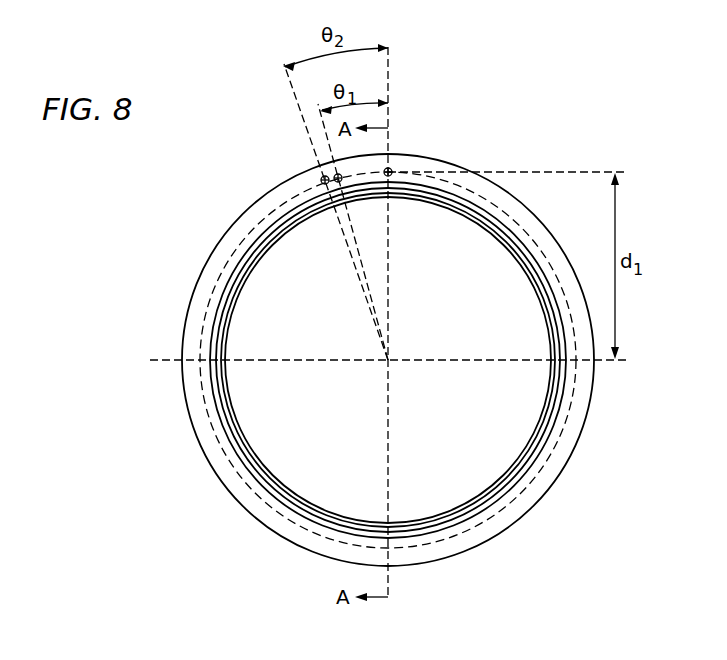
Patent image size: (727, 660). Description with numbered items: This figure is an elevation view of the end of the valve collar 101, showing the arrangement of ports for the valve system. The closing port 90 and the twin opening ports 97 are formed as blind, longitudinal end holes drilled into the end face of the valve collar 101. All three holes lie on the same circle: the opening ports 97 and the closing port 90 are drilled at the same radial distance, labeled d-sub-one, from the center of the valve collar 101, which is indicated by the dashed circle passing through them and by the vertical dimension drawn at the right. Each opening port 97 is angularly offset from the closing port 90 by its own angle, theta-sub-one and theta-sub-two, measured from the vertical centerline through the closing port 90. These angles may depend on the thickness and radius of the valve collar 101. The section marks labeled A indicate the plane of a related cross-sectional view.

The closing port 90 is at (390, 168).
The opening port 97 is at (336, 175).
The valve collar 101 is at (568, 499).